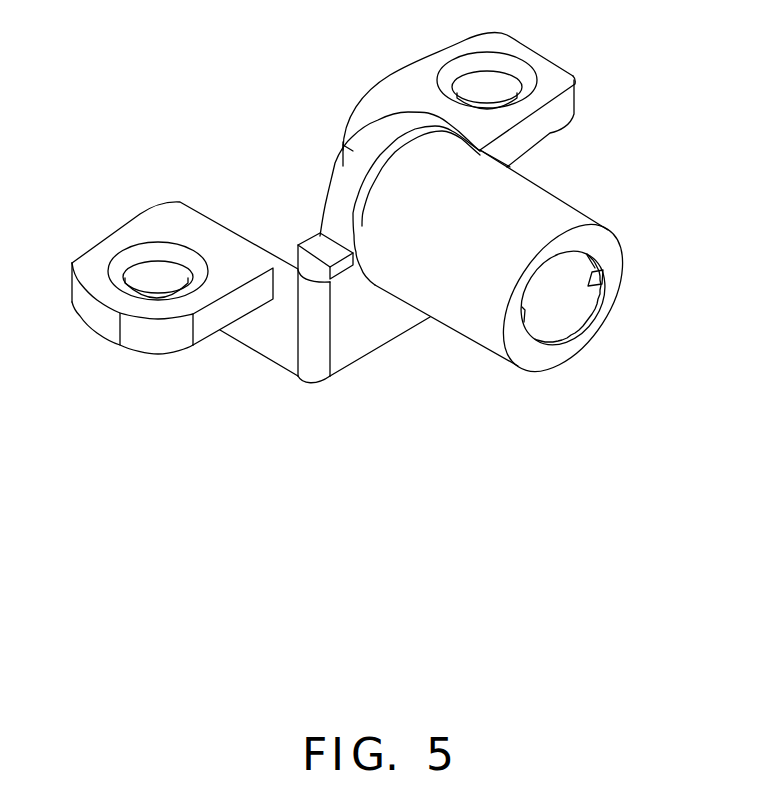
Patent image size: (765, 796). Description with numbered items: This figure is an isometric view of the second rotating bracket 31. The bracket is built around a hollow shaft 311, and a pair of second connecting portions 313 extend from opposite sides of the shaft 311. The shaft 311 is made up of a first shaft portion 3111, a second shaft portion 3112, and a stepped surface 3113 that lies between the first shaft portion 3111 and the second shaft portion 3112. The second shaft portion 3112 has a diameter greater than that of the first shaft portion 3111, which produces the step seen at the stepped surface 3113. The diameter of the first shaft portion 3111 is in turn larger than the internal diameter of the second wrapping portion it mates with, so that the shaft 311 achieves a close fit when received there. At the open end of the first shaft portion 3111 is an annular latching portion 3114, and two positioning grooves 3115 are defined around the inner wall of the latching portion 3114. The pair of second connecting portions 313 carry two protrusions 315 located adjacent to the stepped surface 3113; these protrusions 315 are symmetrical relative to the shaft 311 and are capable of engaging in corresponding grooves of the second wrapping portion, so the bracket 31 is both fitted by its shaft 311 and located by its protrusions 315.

The second rotating bracket 31 is at (190, 148).
The shaft 311 is at (488, 182).
The first shaft portion 3111 is at (542, 218).
The second shaft portion 3112 is at (352, 178).
The stepped surface 3113 is at (407, 147).
The annular latching portion 3114 is at (562, 332).
The positioning groove 3115 is at (604, 276).
The second connecting portion 313 is at (124, 241).
The protrusion 315 is at (340, 270).